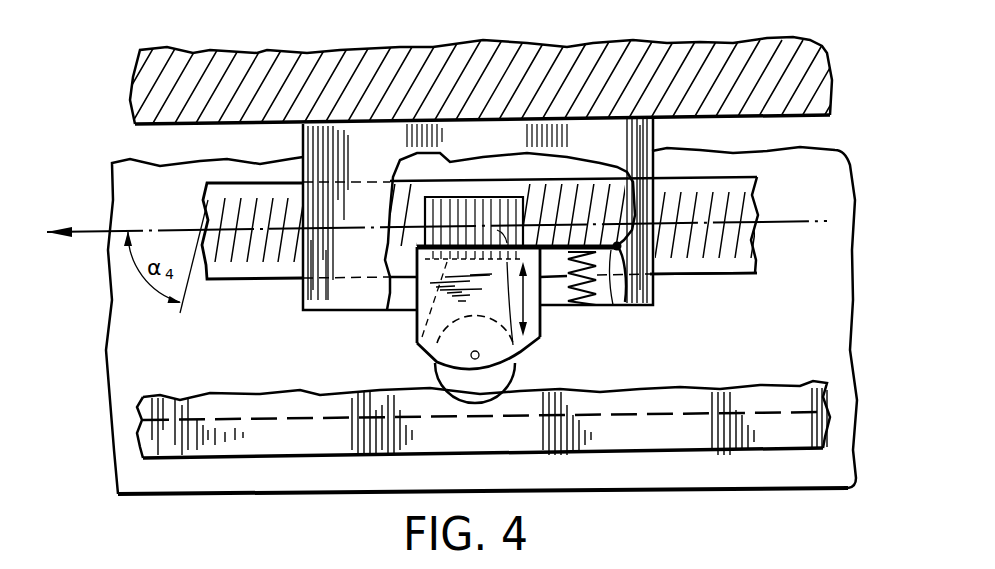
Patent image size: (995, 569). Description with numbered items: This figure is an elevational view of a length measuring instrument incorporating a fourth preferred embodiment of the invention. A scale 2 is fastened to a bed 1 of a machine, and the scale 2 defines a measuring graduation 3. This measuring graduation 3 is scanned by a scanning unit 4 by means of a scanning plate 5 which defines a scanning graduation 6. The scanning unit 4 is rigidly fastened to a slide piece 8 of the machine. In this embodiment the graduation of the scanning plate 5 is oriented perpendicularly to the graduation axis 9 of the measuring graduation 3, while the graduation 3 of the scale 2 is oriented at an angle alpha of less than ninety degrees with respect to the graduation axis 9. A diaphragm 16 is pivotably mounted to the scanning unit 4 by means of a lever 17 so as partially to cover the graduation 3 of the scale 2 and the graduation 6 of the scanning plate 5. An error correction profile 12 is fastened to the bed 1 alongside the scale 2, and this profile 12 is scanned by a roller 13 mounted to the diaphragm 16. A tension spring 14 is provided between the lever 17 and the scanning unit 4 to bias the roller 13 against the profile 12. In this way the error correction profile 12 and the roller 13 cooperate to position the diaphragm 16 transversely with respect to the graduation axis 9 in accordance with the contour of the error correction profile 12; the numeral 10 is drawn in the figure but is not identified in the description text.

The bed 1 is at (790, 313).
The scale 2 is at (750, 268).
The measuring graduation 3 is at (738, 210).
The scanning unit 4 is at (566, 128).
The scanning plate 5 is at (420, 347).
The scanning graduation 6 is at (520, 356).
The slide piece 8 is at (718, 62).
The graduation axis 9 is at (790, 226).
The upper guide surface of carrier 10 is at (740, 185).
The error correction profile 12 is at (817, 380).
The roller 13 is at (452, 368).
The tension spring 14 is at (590, 300).
The diaphragm 16 is at (421, 293).
The lever 17 is at (622, 308).